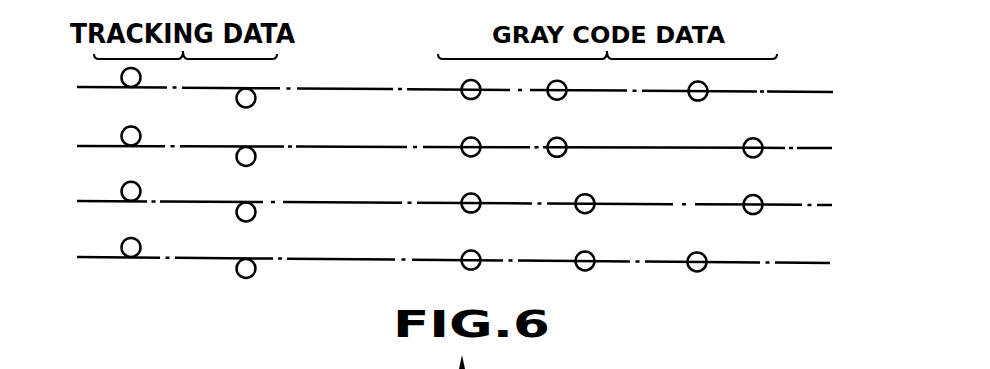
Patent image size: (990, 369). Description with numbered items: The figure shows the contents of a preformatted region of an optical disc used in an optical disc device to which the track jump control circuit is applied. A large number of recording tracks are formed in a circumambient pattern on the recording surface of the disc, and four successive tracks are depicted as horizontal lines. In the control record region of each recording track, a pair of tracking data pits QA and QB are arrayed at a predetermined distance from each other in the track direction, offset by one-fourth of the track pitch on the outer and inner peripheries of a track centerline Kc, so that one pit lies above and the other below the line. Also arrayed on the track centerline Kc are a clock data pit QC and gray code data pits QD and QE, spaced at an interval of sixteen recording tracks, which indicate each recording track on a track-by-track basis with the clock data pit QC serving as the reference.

The tracking data pit QA is at (132, 258).
The tracking data pit QB is at (248, 278).
The clock data pit QC is at (475, 268).
The gray code data pit QD is at (587, 269).
The gray code data pit QE is at (699, 270).
The track centerline Kc is at (92, 202).